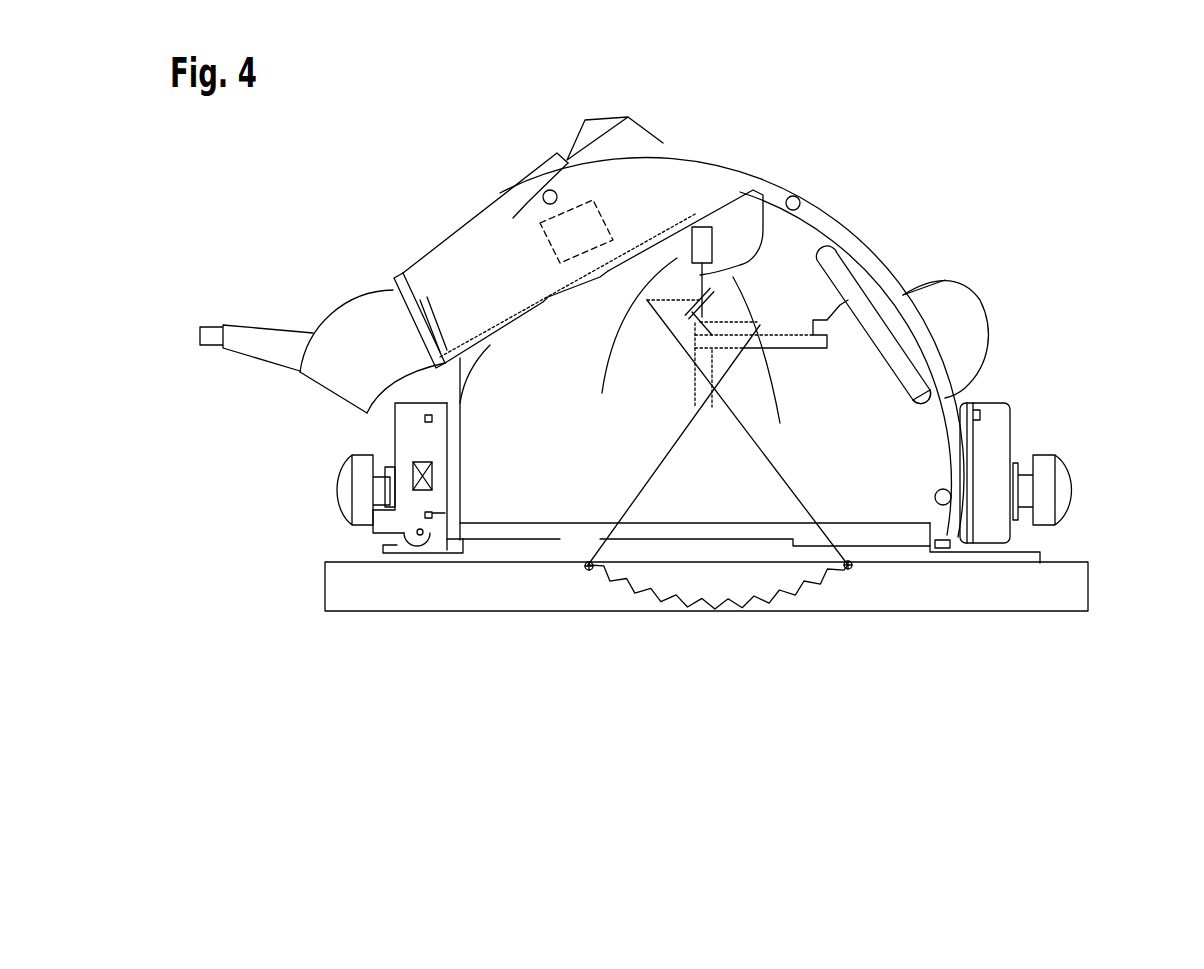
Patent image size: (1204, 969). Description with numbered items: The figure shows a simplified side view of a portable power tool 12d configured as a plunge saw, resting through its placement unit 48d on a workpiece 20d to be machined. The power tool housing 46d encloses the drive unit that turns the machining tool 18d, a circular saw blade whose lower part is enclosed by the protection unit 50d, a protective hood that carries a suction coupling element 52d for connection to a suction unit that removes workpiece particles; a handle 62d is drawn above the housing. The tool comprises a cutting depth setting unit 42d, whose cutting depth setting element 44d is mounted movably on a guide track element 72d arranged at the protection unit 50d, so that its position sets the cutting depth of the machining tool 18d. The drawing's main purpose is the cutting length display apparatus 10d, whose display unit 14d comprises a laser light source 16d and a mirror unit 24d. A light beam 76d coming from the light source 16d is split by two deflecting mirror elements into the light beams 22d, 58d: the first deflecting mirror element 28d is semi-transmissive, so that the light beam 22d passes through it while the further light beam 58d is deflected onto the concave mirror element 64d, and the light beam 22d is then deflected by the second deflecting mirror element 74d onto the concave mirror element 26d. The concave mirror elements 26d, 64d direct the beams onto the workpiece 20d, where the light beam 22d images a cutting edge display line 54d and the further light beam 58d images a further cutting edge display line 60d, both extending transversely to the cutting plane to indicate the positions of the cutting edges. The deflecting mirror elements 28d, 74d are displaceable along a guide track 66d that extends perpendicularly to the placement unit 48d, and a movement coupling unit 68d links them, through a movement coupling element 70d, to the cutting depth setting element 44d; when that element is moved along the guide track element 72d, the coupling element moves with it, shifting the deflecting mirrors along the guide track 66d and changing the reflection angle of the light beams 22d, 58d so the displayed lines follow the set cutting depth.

The cutting length display apparatus 10d is at (588, 434).
The portable power tool 12d is at (1085, 185).
The display unit 14d is at (785, 232).
The light source 16d is at (702, 227).
The machining tool 18d is at (763, 590).
The workpiece 20d is at (1045, 597).
The light beam 22d is at (628, 502).
The mirror unit 24d is at (590, 378).
The concave mirror element 26d is at (780, 398).
The first deflecting mirror element 28d is at (712, 292).
The cutting depth setting unit 42d is at (950, 270).
The cutting depth setting element 44d is at (975, 348).
The power tool housing 46d is at (617, 170).
The placement unit 48d is at (398, 557).
The protection unit 50d is at (962, 430).
The suction coupling element 52d is at (357, 332).
The cutting edge display line 54d is at (590, 567).
The further light beam 58d is at (807, 507).
The further cutting edge display line 60d is at (846, 567).
The handle 62d is at (527, 200).
The concave mirror element 64d is at (615, 352).
The guide track 66d is at (695, 395).
The movement coupling unit 68d is at (857, 270).
The movement coupling element 70d is at (945, 280).
The guide track element 72d is at (910, 398).
The second deflecting mirror element 74d is at (690, 318).
The light beam 76d is at (748, 205).